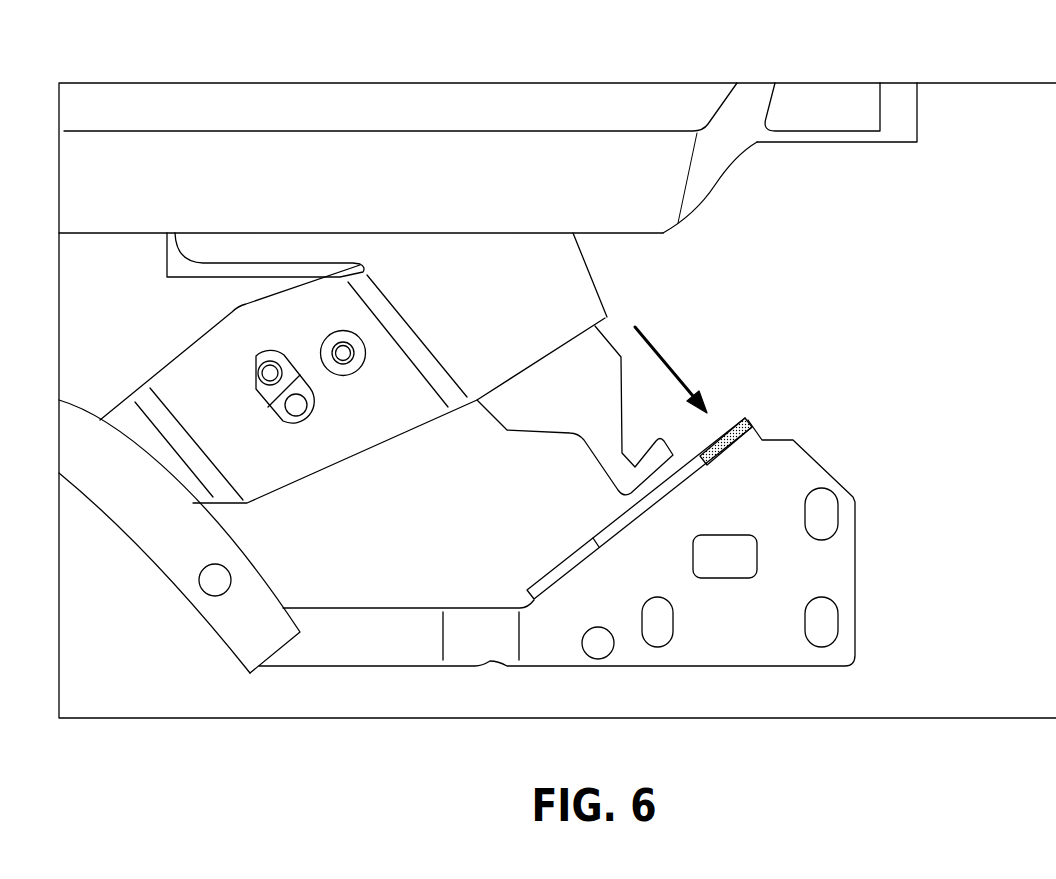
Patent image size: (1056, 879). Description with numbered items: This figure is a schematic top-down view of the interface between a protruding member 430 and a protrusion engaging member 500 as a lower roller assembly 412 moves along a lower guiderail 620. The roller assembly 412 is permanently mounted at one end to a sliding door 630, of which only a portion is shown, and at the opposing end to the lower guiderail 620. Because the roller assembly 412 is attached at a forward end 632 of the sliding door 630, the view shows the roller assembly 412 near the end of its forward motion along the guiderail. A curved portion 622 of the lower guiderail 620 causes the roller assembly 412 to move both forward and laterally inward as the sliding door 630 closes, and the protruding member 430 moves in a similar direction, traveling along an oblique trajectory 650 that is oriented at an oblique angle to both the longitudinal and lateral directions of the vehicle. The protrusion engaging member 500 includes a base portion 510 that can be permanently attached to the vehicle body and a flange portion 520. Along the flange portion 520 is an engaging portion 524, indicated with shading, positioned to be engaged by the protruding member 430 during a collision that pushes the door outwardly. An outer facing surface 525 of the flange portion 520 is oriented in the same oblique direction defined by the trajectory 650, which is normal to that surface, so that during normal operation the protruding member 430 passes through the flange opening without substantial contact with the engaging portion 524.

The lower roller assembly 412 is at (327, 485).
The protruding member 430 is at (543, 412).
The protrusion engaging member 500 is at (641, 572).
The base portion 510 is at (742, 637).
The flange portion 520 is at (673, 486).
The engaging portion 524 is at (742, 417).
The outer facing surface 525 is at (560, 572).
The lower guiderail 620 is at (207, 627).
The curved portion 622 is at (132, 503).
The sliding door 630 is at (513, 155).
The forward end 632 is at (830, 112).
The oblique trajectory 650 is at (677, 372).